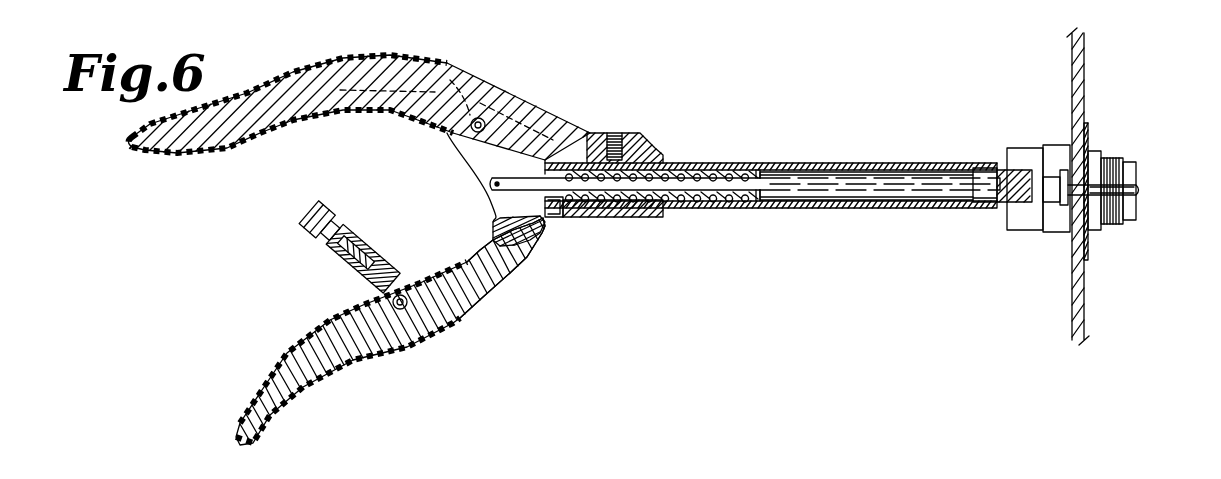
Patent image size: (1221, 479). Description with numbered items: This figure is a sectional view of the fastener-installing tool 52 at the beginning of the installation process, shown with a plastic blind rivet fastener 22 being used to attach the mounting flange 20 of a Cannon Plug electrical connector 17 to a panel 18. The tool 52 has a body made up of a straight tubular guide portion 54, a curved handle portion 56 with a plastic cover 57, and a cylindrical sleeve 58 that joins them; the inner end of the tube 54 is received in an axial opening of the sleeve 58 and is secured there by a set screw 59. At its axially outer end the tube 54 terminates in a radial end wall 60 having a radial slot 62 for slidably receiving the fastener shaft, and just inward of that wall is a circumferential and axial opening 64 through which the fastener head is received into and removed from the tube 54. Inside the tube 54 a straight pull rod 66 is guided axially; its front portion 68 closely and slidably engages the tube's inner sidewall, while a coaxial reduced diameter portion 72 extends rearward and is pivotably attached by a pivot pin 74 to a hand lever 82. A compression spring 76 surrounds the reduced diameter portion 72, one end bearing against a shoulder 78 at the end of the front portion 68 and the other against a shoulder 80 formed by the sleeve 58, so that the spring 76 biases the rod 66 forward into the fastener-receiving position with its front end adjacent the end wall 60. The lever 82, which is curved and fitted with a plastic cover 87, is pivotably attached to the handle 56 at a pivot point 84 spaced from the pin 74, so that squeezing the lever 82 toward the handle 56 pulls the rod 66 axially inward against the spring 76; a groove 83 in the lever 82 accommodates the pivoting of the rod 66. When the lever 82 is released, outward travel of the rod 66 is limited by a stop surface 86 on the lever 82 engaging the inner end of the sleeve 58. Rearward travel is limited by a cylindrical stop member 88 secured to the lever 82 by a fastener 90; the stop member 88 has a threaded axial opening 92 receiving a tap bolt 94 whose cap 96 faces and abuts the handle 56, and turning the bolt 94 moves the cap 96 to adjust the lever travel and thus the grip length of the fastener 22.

The electrical connector 17 is at (1092, 151).
The panel 18 is at (1076, 323).
The mounting flange 20 is at (1089, 247).
The plastic blind rivet fastener 22 is at (1094, 186).
The tool 52 is at (697, 163).
The tubular guide portion 54 is at (807, 209).
The handle portion 56 is at (414, 62).
The plastic cover 57 is at (368, 58).
The cylindrical sleeve 58 is at (640, 218).
The set screw 59 is at (614, 133).
The radial end wall 60 is at (1043, 172).
The radial slot 62 is at (1060, 176).
The opening 64 is at (983, 165).
The rod 66 is at (890, 201).
The front portion of rod 68 is at (880, 184).
The reduced diameter portion 72 is at (740, 212).
The pivot pin 74 is at (490, 184).
The compression spring 76 is at (702, 217).
The shoulder 78 is at (752, 165).
The shoulder 80 is at (580, 163).
The hand lever 82 is at (498, 300).
The groove 83 is at (496, 226).
The pivot attachment point 84 is at (484, 119).
The stop surface 86 is at (560, 218).
The plastic cover 87 is at (423, 338).
The cylindrical stop member 88 is at (342, 278).
The fastener 90 is at (408, 304).
The threaded axial opening 92 is at (368, 232).
The tap bolt 94 is at (322, 250).
The cap 96 is at (316, 212).